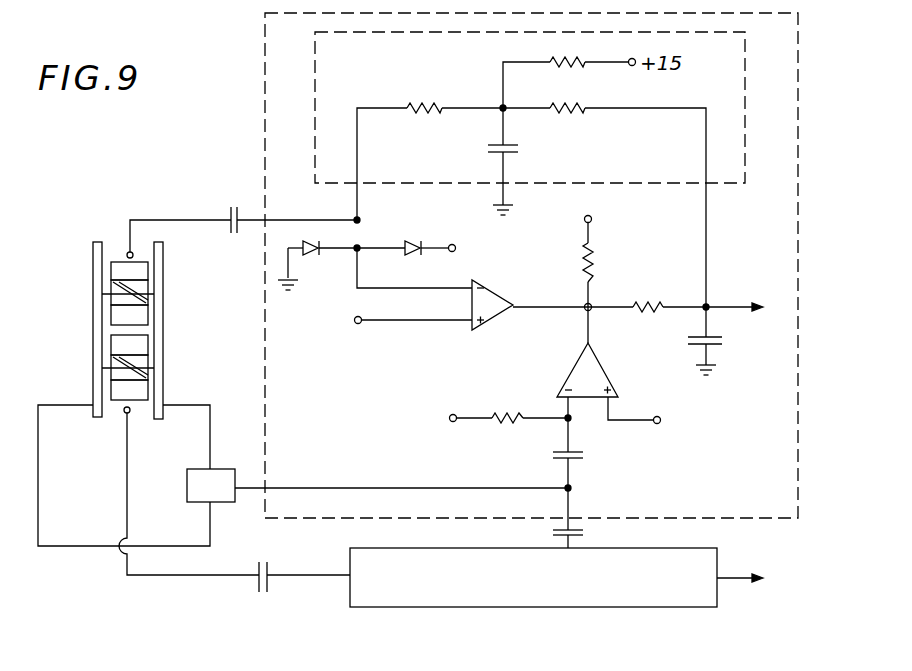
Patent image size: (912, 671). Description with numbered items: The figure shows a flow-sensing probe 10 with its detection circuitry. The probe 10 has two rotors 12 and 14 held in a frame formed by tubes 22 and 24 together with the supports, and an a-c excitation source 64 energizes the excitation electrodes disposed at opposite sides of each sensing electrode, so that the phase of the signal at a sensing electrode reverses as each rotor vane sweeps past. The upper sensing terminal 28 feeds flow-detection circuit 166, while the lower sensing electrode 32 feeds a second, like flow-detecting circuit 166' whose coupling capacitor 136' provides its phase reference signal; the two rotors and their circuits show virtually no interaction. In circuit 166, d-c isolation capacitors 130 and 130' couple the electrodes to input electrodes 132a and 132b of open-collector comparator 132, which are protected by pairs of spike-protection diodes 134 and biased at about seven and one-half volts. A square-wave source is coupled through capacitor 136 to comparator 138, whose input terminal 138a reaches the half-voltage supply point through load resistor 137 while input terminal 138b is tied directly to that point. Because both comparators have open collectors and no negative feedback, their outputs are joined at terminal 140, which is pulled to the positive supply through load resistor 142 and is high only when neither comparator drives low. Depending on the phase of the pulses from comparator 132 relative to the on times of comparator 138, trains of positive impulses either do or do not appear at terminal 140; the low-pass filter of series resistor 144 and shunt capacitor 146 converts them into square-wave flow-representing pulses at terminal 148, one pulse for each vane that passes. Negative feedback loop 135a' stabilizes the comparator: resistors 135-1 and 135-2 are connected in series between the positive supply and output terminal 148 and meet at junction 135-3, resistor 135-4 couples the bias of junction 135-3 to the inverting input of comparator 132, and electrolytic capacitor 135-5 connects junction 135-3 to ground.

The probe 10 is at (88, 355).
The rotor 12 is at (118, 272).
The rotor 14 is at (138, 350).
The tube 22 is at (95, 313).
The tube 24 is at (167, 310).
The first terminal 28 is at (125, 250).
The sensing electrode 32 is at (125, 414).
The a-c excitation source 64 is at (377, 486).
The d-c isolation capacitor 130 is at (281, 199).
The d-c isolation capacitor 130' is at (296, 562).
The open-collector comparator 132 is at (492, 325).
The input electrode 132a is at (388, 290).
The input electrode 132b is at (390, 323).
The spike-protection diodes 134 is at (384, 243).
The resistor 135-1 is at (556, 118).
The resistor 135-2 is at (560, 70).
The junction 135-3 is at (503, 105).
The resistor 135-4 is at (440, 102).
The capacitor 135-5 is at (488, 148).
The negative feedback loop 135a' is at (554, 127).
The capacitor 136 is at (600, 454).
The coupling capacitor 136' is at (530, 518).
The load resistor 137 is at (500, 425).
The comparator 138 is at (566, 382).
The input terminal 138a is at (568, 404).
The input terminal 138b is at (612, 412).
The terminal 140 is at (592, 310).
The load resistor 142 is at (583, 258).
The series resistor 144 is at (660, 300).
The shunt capacitor 146 is at (722, 345).
The terminal 148 is at (686, 307).
The flow-detection circuit 166 is at (510, 265).
The flow-detecting circuit 166' is at (527, 578).